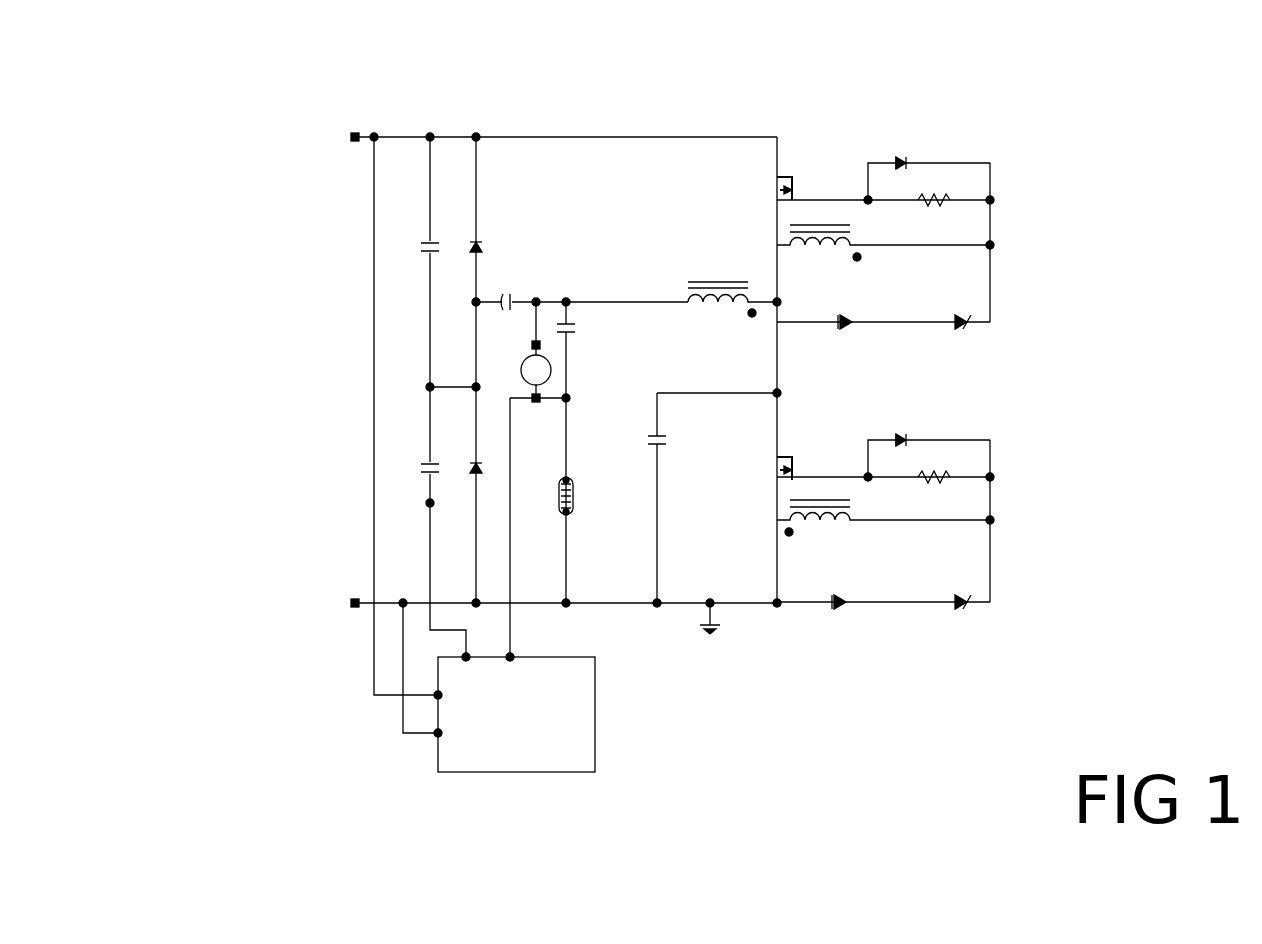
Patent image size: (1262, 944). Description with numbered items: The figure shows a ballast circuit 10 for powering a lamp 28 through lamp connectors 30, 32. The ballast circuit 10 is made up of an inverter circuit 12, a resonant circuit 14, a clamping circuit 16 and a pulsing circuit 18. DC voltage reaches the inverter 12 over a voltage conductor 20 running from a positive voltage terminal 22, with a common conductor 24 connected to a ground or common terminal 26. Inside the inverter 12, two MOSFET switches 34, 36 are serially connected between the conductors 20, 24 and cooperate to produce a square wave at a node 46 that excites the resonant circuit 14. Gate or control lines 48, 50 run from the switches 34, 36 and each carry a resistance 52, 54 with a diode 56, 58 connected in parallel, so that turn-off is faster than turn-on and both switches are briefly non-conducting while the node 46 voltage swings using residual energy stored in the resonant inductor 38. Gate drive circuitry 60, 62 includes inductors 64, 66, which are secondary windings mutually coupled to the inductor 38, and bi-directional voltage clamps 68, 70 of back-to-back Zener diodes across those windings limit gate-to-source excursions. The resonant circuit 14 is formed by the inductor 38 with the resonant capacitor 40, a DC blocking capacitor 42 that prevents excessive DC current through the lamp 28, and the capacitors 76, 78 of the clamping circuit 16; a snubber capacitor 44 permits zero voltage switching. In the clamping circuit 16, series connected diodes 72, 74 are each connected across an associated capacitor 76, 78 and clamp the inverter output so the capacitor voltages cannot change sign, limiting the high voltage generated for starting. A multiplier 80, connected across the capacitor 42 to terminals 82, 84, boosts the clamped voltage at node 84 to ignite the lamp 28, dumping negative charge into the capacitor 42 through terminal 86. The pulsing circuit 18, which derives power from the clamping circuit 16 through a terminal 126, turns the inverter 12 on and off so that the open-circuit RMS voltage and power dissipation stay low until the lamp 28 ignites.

The ballast circuit 10 is at (228, 150).
The inverter circuit 12 is at (1028, 232).
The resonant circuit 14 is at (634, 268).
The clamping circuit 16 is at (350, 290).
The pulsing circuit 18 is at (595, 690).
The voltage conductor 20 is at (500, 137).
The positive voltage terminal 22 is at (351, 137).
The common conductor 24 is at (530, 605).
The common terminal 26 is at (351, 603).
The lamp 28 is at (559, 492).
The lamp connector 30 is at (568, 479).
The lamp connector 32 is at (570, 516).
The switch 34 is at (780, 178).
The switch 36 is at (780, 457).
The resonant inductor 38 is at (702, 281).
The resonant capacitor 40 is at (507, 294).
The DC blocking capacitor 42 is at (577, 328).
The snubber capacitor 44 is at (661, 438).
The node 46 is at (780, 300).
The gate line 48 is at (812, 200).
The gate line 50 is at (816, 477).
The resistance 52 is at (931, 196).
The resistance 54 is at (934, 474).
The diode 56 is at (903, 161).
The diode 58 is at (903, 438).
The gate drive circuitry 60 is at (958, 233).
The gate drive circuitry 62 is at (948, 513).
The inductor 64 is at (855, 230).
The inductor 66 is at (855, 507).
The bi-directional voltage clamp 68 is at (880, 320).
The bi-directional voltage clamp 70 is at (873, 600).
The clamping diode 72 is at (480, 245).
The clamping diode 74 is at (479, 464).
The capacitor 76 is at (418, 242).
The capacitor 78 is at (418, 465).
The multiplier 80 is at (521, 371).
The terminal 82 is at (531, 345).
The terminal 84 is at (538, 403).
The terminal 86 is at (472, 301).
The terminal 126 is at (426, 503).